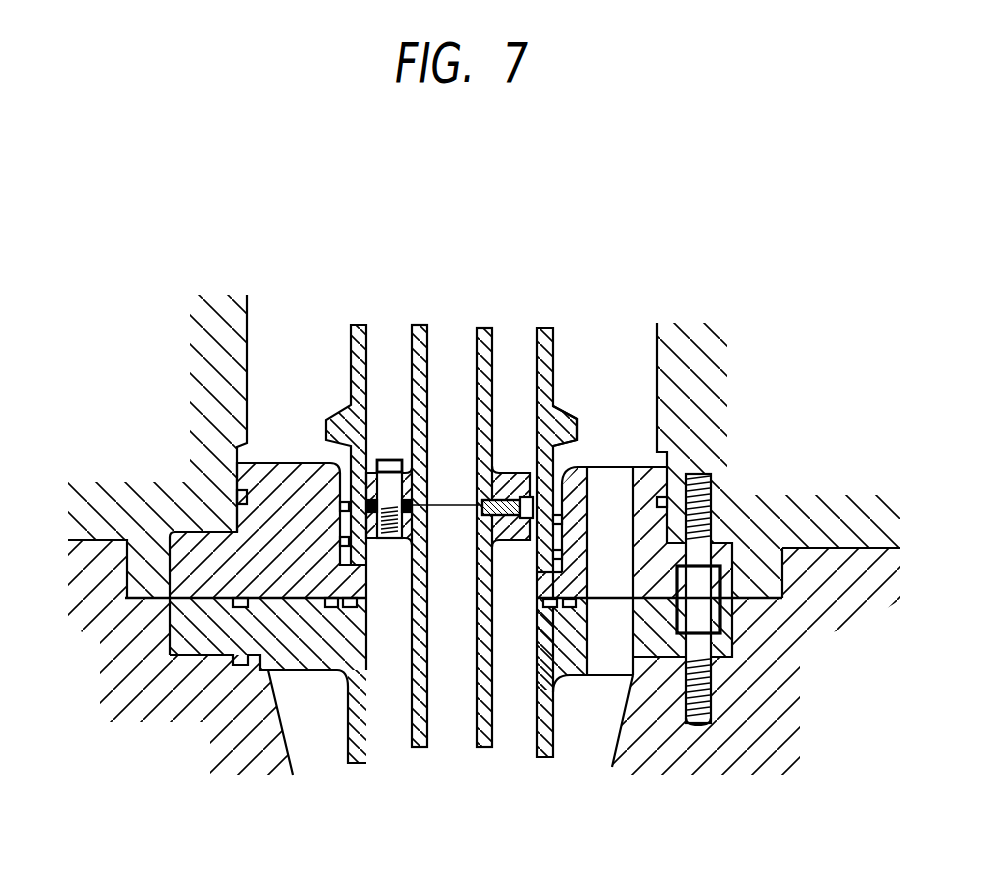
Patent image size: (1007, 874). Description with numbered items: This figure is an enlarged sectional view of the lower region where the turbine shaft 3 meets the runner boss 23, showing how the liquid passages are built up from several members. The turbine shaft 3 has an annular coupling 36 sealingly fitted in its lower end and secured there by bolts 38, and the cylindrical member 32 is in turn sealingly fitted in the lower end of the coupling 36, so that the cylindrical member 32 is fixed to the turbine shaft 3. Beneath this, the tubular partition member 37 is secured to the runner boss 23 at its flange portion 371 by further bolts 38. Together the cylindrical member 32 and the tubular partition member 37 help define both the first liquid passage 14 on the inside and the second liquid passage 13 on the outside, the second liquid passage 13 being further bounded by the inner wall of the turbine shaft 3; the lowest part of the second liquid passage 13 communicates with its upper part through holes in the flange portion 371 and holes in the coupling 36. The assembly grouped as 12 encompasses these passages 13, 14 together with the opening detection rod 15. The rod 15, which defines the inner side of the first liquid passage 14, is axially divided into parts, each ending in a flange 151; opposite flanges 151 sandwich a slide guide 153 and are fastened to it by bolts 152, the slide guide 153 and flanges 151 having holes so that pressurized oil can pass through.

The turbine shaft 3 is at (747, 446).
The rotor shaft assembly 12 is at (516, 457).
The second liquid passage 13 is at (577, 358).
The first liquid passage 14 is at (509, 357).
The opening detection rod 15 is at (485, 324).
The runner boss 23 is at (653, 728).
The cylindrical member 32 is at (553, 375).
The annular coupling 36 is at (647, 476).
The tubular partition member 37 is at (545, 758).
The bolts 38 is at (707, 500).
The flange 151 is at (522, 472).
The bolts 152 is at (390, 459).
The slide guide 153 is at (493, 533).
The flange portion 371 is at (570, 672).